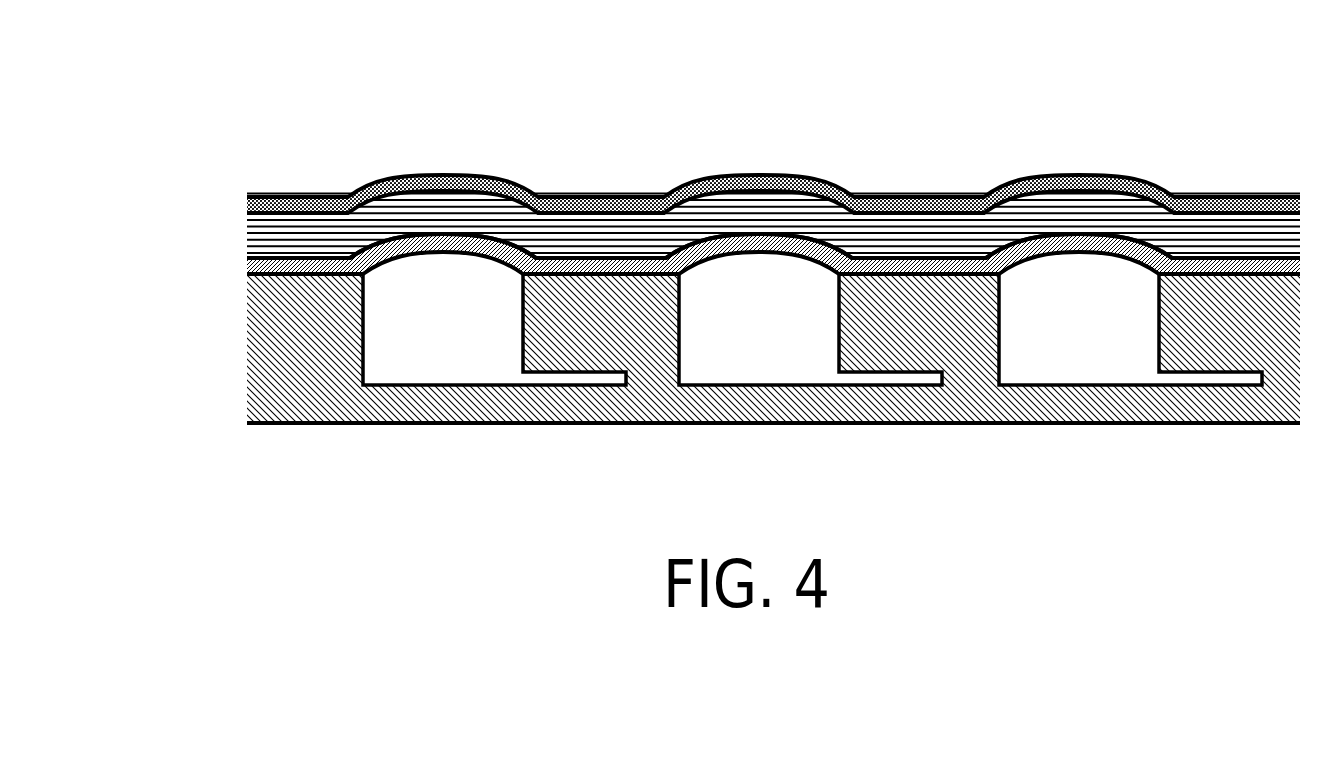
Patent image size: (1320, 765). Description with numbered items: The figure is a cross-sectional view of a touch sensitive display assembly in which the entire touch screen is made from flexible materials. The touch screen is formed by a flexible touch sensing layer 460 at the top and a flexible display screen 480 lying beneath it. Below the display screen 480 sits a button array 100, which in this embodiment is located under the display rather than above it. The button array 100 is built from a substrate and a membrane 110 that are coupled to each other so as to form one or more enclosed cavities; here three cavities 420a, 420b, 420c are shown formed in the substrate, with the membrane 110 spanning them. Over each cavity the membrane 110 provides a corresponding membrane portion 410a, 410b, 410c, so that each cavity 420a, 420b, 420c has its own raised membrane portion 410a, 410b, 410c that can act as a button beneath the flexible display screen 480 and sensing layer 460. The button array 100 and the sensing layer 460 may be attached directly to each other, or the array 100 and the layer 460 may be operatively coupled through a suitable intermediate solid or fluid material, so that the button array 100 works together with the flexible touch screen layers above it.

The button array 100 is at (233, 264).
The membrane 110 is at (590, 257).
The membrane portion 410a is at (441, 233).
The membrane portion 410b is at (758, 233).
The membrane portion 410c is at (1077, 233).
The cavity 420a is at (443, 385).
The cavity 420b is at (758, 385).
The cavity 420c is at (1080, 385).
The flexible touch sensing layer 460 is at (233, 195).
The flexible display screen 480 is at (233, 219).